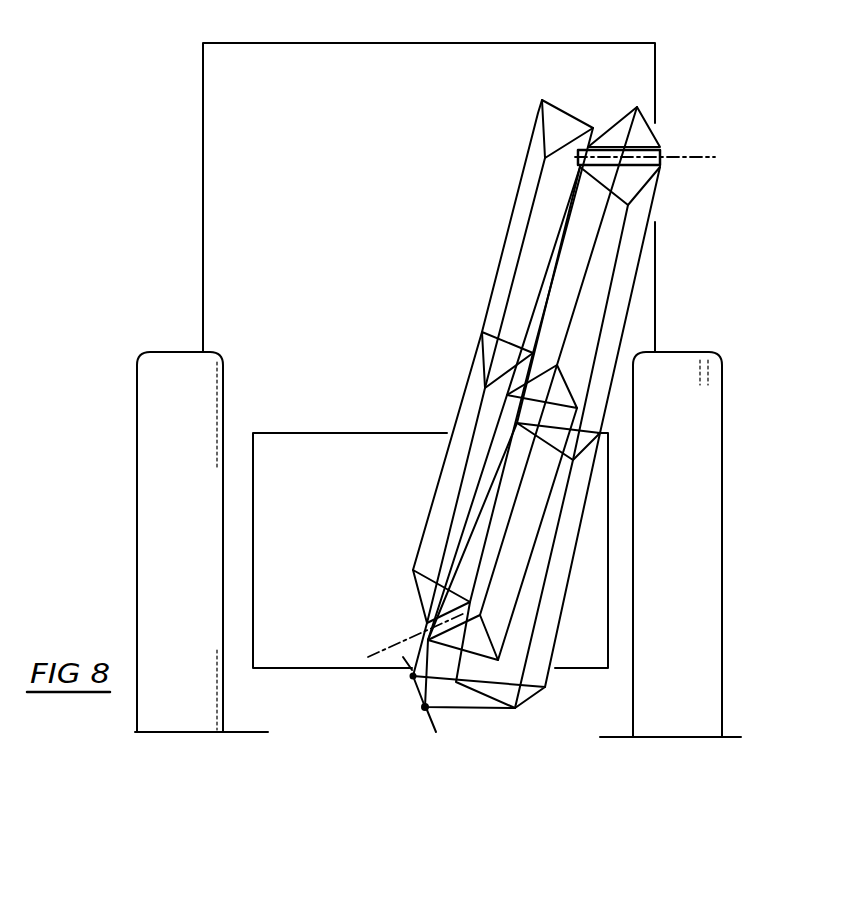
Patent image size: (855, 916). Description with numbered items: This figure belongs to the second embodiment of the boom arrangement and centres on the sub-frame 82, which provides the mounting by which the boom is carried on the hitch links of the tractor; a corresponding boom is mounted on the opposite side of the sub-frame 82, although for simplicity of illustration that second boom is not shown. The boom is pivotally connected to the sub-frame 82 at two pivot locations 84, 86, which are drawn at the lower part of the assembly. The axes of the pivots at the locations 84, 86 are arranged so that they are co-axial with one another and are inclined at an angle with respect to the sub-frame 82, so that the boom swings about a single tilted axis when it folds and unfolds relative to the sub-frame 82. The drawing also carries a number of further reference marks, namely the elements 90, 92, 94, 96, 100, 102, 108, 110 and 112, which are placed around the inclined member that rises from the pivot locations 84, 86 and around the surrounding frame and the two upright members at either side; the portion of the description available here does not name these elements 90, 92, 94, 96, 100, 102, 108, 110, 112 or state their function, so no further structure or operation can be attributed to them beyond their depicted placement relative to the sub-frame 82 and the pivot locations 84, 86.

The sub-frame 82 is at (322, 431).
The pivot location 84 is at (410, 679).
The pivot location 86 is at (425, 708).
The lower prism 90 is at (562, 633).
The second prism 92 is at (543, 523).
The first prism 94 is at (548, 250).
The prism collar 96 is at (640, 147).
The optical axis 100 is at (705, 157).
The optical axis 102 is at (370, 650).
The housing 108 is at (700, 35).
The support posts 110 is at (224, 390).
The pivot axis 112 is at (436, 732).